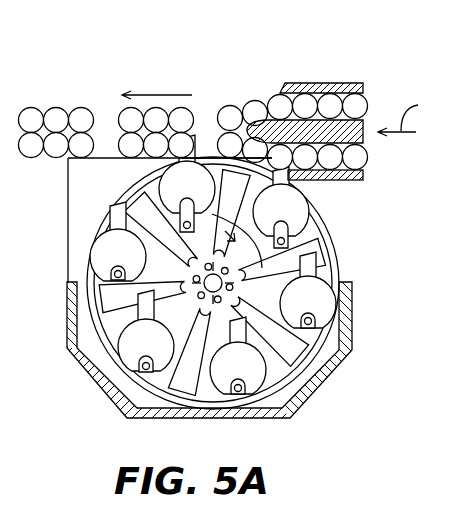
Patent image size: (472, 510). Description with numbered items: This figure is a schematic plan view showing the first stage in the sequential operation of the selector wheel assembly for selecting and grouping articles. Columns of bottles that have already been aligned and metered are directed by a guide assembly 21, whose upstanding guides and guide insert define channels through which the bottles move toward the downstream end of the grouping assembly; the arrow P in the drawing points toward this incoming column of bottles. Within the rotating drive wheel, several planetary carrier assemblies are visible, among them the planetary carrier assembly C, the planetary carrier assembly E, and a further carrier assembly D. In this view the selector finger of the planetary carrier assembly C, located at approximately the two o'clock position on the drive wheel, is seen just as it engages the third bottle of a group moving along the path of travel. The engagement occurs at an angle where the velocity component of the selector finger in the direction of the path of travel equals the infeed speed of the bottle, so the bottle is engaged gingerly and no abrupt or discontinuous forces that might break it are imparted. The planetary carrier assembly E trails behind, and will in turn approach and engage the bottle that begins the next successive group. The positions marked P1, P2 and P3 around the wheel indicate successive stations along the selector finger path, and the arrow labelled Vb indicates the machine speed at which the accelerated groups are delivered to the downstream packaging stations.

The guide assembly 21 is at (336, 60).
The pushing force P is at (407, 114).
The first position P1 is at (210, 158).
The second position P2 is at (96, 282).
The third position P3 is at (215, 393).
The planetary carrier assembly C is at (304, 209).
The position D pocket D is at (175, 160).
The planetary carrier assembly E is at (318, 293).
The machine speed Vb is at (157, 81).